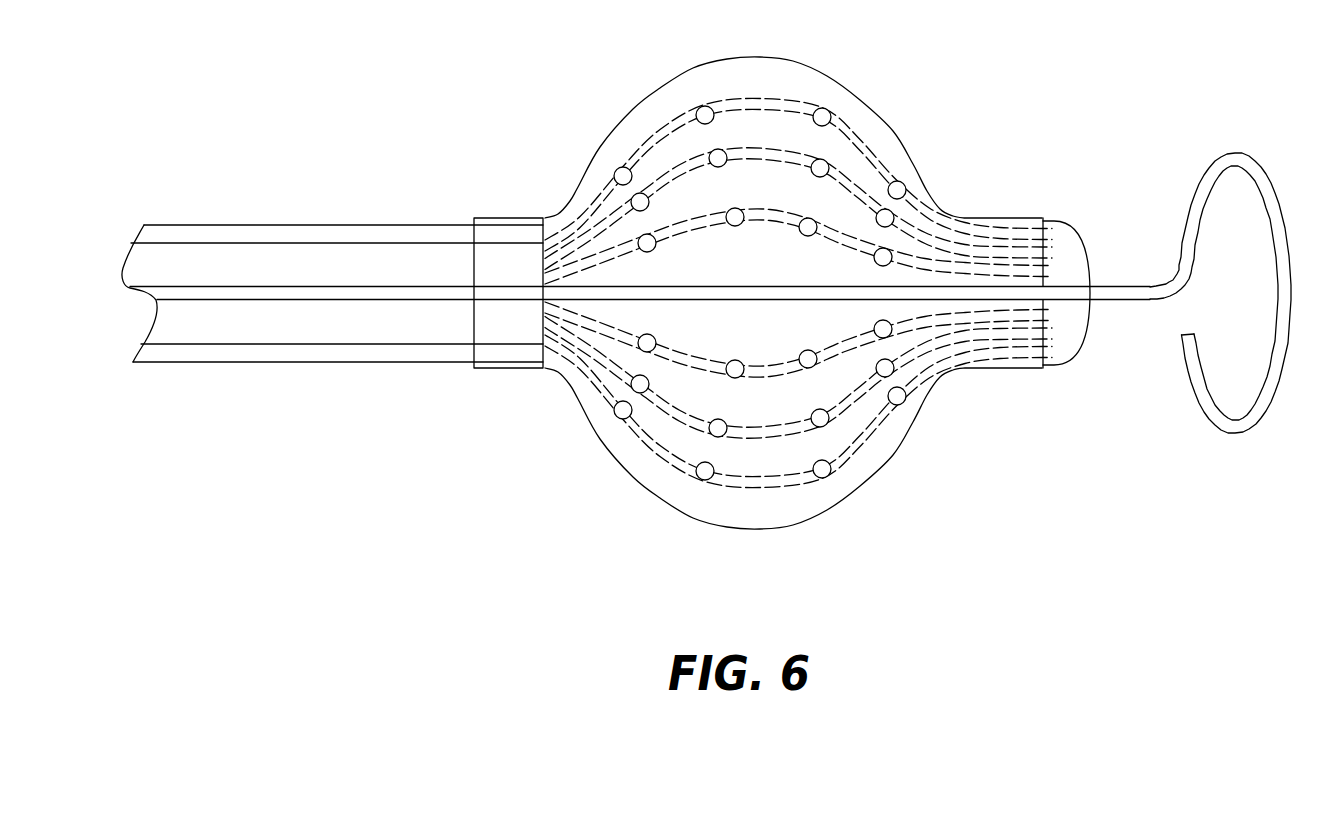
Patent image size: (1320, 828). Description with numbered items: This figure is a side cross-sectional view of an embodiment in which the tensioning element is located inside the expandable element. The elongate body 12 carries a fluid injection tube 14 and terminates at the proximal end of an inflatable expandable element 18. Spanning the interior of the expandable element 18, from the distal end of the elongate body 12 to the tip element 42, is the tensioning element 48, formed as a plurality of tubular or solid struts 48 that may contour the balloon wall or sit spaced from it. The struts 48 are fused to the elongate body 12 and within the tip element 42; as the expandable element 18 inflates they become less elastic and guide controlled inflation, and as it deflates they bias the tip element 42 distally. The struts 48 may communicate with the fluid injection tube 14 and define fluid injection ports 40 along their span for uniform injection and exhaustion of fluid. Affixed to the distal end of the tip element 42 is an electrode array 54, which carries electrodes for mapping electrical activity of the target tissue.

The elongate body 12 is at (222, 225).
The fluid injection tube 14 is at (318, 253).
The expandable element 18 is at (653, 90).
The fluid injection ports 40 is at (702, 473).
The tip element 42 is at (1075, 338).
The tensioning element 48 is at (652, 433).
The electrode array 54 is at (1236, 153).